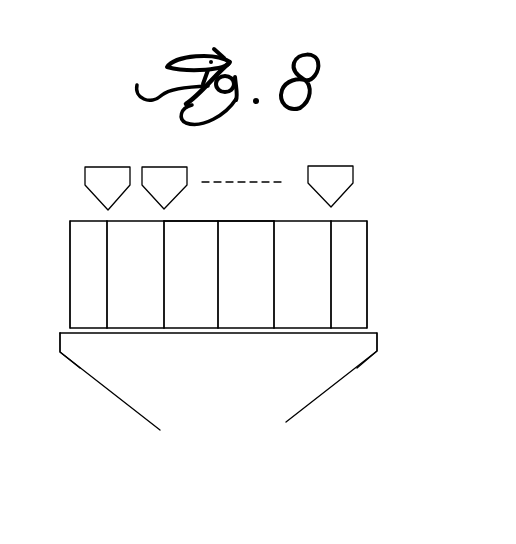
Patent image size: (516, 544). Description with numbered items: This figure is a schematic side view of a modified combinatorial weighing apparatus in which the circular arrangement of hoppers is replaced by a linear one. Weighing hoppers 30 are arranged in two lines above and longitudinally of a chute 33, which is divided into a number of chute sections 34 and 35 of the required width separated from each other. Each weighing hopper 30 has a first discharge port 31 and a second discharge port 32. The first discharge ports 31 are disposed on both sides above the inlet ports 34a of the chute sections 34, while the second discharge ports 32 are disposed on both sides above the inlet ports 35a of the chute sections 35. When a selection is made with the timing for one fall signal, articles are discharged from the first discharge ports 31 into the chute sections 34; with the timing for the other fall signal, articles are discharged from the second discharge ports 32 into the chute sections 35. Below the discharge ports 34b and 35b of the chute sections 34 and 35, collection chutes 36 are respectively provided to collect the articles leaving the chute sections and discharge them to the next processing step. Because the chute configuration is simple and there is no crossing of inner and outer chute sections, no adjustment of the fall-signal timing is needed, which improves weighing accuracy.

The weighing hopper 30 is at (92, 165).
The first discharge port 31 is at (100, 205).
The second discharge port 32 is at (158, 207).
The chute 33 is at (56, 242).
The chute section 34 is at (97, 282).
The chute section 35 is at (142, 282).
The inlet port 34a is at (201, 219).
The inlet port 35a is at (251, 219).
The discharge port 34b is at (88, 333).
The discharge port 35b is at (348, 333).
The collection chute 36 is at (120, 392).